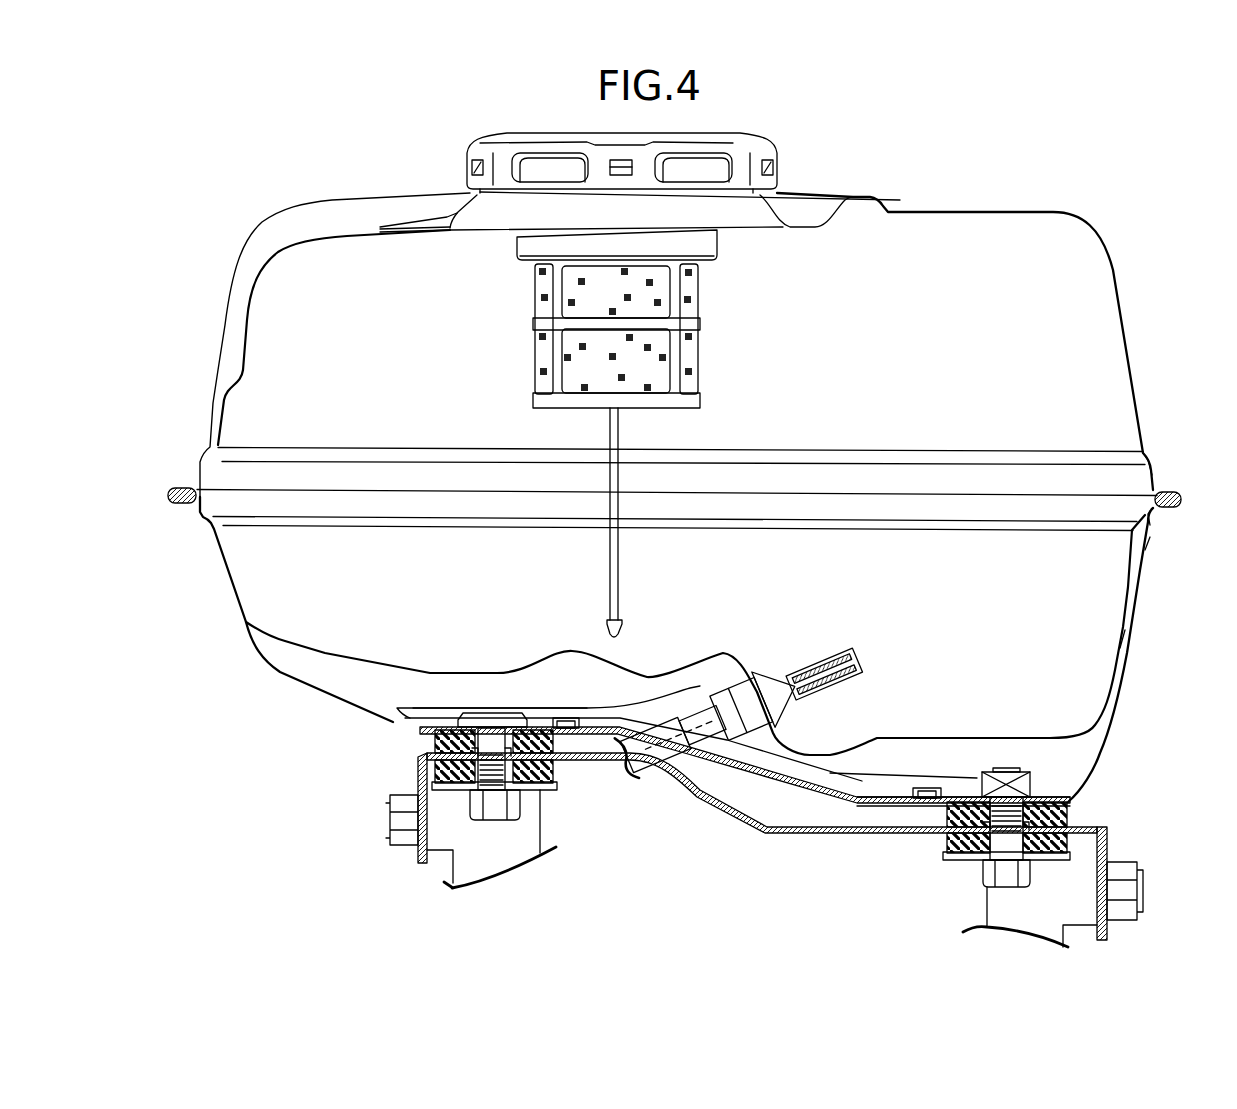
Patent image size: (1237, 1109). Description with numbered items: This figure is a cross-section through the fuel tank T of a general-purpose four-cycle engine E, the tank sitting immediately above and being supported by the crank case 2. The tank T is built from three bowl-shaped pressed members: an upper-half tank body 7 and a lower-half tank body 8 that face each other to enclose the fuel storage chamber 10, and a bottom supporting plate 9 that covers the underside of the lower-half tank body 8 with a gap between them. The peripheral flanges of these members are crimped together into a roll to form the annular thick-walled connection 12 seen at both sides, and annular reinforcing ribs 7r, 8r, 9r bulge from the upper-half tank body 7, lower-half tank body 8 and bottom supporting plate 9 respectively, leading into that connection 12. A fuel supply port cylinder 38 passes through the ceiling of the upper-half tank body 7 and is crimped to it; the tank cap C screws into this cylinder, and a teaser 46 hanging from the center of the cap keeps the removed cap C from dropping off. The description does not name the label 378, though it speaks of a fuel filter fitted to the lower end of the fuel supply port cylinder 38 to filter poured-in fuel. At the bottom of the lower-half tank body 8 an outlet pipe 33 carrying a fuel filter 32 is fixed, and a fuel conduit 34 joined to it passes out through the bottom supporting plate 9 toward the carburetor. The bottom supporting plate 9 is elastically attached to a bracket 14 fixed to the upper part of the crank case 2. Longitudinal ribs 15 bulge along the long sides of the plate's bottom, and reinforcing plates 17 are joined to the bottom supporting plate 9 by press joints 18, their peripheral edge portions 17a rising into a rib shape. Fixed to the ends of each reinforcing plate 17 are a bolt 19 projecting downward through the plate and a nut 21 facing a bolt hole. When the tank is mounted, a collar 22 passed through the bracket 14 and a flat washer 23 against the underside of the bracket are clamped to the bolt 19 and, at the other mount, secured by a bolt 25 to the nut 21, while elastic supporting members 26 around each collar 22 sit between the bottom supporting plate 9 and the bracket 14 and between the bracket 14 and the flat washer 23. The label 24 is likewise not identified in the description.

The fuel tank T is at (1128, 296).
The tank cap C is at (753, 132).
The upper-half tank body 7 is at (1060, 212).
The lower-half tank body 8 is at (1127, 618).
The bottom supporting plate 9 is at (1135, 613).
The annular reinforcing rib 7r is at (1153, 474).
The annular reinforcing rib 8r is at (1154, 513).
The annular reinforcing rib 9r is at (1157, 540).
The annular thick-walled connection 12 is at (1181, 489).
The fuel storage chamber 10 is at (809, 395).
The fuel supply port cylinder 38 is at (715, 237).
The fuel filter 378 is at (695, 353).
The teaser 46 is at (619, 581).
The reinforcing plate 17 is at (863, 791).
The peripheral edge portion 17a is at (875, 797).
The press joint 18 is at (567, 719).
The bolt 19 is at (473, 717).
The nut 21 is at (1005, 772).
The collar 22 is at (518, 774).
The flat washer 23 is at (551, 789).
The nut 24 is at (493, 807).
The bolt 25 is at (1007, 884).
The elastic supporting member 26 is at (433, 773).
The bracket 14 is at (800, 834).
The longitudinal rib 15 is at (876, 806).
The fuel filter 32 is at (820, 668).
The outlet pipe 33 is at (698, 718).
The fuel conduit 34 is at (660, 753).
The crank case 2 is at (997, 923).
The general-purpose four-cycle engine E is at (1081, 866).